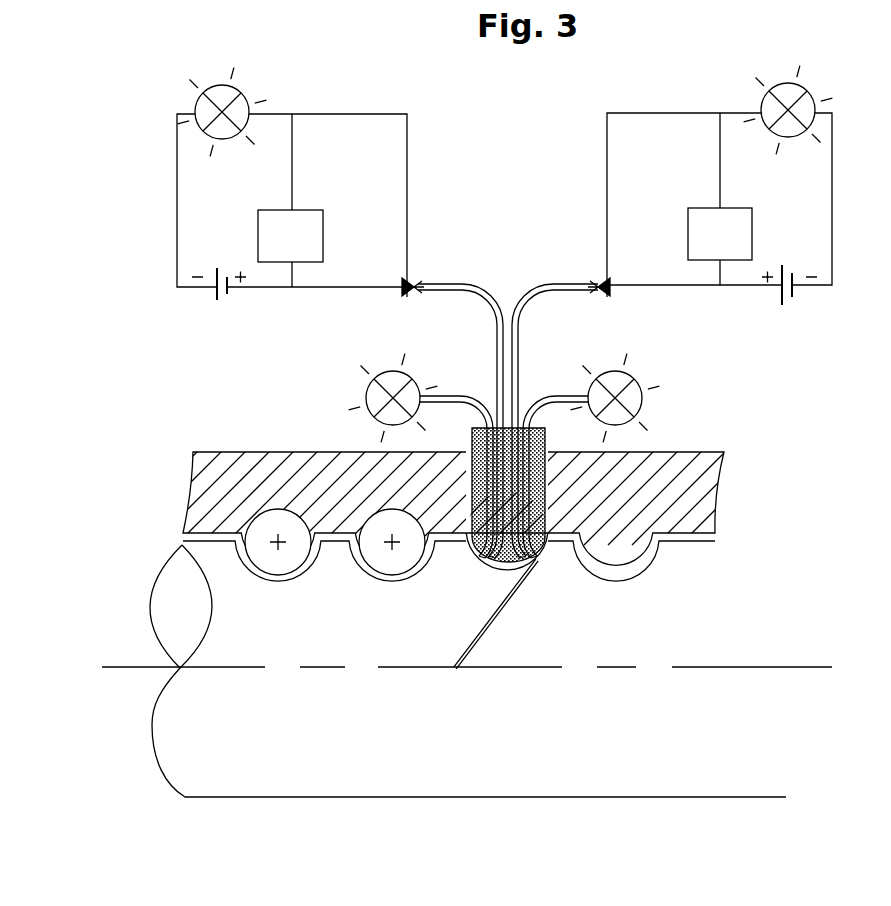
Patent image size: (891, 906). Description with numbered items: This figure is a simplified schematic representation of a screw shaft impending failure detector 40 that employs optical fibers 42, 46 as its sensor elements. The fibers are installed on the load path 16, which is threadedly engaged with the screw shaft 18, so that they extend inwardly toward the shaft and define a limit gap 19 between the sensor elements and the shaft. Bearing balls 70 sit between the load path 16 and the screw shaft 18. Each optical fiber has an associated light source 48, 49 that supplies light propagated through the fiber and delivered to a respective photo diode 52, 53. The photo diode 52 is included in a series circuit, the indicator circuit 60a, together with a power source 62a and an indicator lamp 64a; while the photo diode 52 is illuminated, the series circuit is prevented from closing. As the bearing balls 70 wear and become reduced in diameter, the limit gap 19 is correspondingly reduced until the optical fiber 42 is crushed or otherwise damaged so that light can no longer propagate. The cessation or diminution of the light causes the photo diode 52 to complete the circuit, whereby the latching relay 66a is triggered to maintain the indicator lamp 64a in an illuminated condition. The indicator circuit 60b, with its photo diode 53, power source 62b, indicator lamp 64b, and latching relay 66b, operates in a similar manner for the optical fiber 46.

The load path 16 is at (193, 477).
The screw shaft 18 is at (173, 598).
The limit gap 19 is at (447, 573).
The screw shaft impending failure detector 40 is at (888, 469).
The optical fiber 42 is at (447, 284).
The optical fiber 46 is at (531, 285).
The light source 48 is at (367, 392).
The light source 49 is at (641, 392).
The photo diode 52 is at (407, 297).
The photo diode 53 is at (610, 297).
The indicator circuit 60a is at (330, 181).
The indicator circuit 60b is at (670, 181).
The power source 62a is at (220, 268).
The power source 62b is at (783, 266).
The indicator lamp 64a is at (218, 90).
The indicator lamp 64b is at (766, 88).
The latching relay 66a is at (313, 213).
The latching relay 66b is at (705, 212).
The bearing balls 70 is at (275, 563).